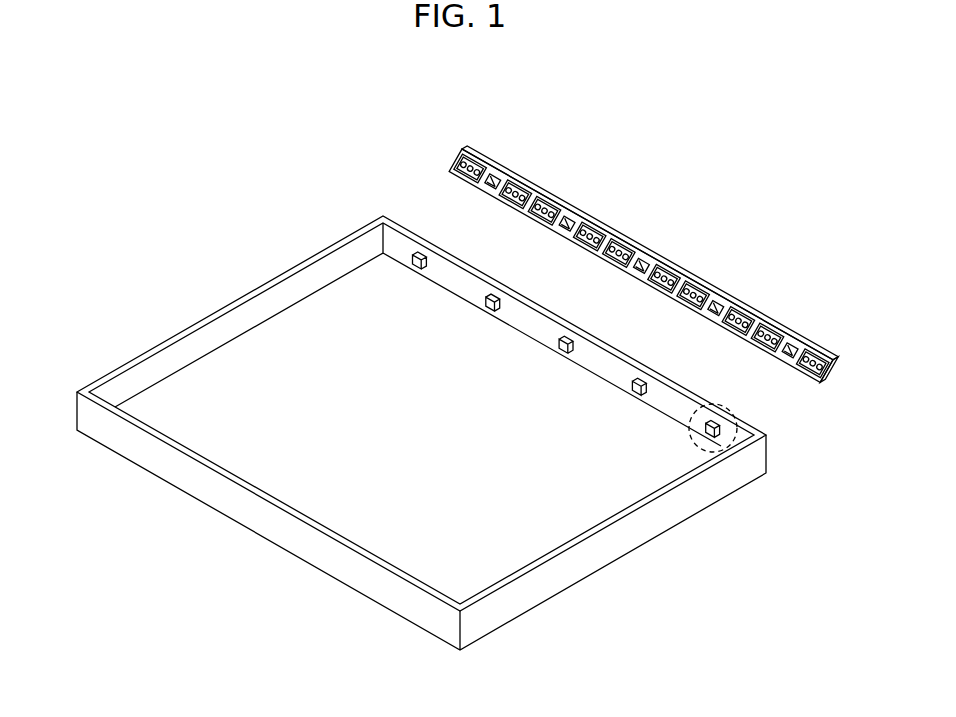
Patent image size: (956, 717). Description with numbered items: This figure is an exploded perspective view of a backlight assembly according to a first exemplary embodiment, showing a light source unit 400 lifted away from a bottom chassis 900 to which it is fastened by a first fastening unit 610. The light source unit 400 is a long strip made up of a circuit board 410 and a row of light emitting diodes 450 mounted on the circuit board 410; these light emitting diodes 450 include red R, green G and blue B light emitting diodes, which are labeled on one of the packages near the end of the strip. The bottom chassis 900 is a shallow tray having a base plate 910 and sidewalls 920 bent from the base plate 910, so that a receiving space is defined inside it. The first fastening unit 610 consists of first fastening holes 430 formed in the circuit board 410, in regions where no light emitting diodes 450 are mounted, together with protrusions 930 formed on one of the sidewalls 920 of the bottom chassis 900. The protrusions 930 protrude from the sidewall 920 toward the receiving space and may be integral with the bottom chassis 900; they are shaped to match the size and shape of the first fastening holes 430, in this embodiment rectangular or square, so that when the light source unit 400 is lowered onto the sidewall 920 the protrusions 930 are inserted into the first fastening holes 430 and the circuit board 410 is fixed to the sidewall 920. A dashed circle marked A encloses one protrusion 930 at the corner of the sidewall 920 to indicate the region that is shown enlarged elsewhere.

The light source unit 400 is at (453, 152).
The circuit board 410 is at (468, 148).
The first fastening holes 430 is at (569, 222).
The light emitting diodes 450 is at (673, 266).
The red light emitting diode R is at (693, 285).
The green light emitting diode G is at (705, 291).
The blue light emitting diode B is at (715, 294).
The bottom chassis 900 is at (672, 542).
The base plate 910 is at (310, 472).
The sidewalls 920 is at (297, 535).
The protrusions 930 is at (412, 263).
The enlarged region A is at (689, 433).
The first fastening unit 610 is at (722, 669).